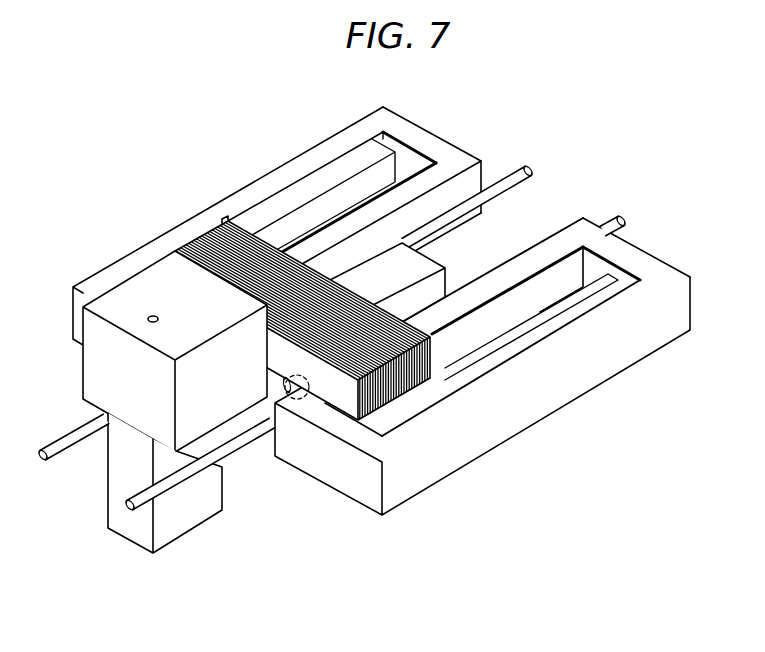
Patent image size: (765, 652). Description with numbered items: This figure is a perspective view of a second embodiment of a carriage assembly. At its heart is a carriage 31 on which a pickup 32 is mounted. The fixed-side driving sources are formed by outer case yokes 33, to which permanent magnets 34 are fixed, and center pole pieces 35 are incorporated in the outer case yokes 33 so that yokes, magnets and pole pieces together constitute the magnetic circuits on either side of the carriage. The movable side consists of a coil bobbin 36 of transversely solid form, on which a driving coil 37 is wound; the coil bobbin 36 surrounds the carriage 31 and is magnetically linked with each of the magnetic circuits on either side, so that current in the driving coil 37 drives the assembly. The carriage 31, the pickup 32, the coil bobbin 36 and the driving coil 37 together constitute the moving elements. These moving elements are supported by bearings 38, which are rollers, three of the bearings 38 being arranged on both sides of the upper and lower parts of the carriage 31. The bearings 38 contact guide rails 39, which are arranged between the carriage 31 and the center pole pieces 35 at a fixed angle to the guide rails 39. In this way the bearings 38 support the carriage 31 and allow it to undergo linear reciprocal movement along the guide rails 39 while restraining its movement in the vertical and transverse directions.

The carriage 31 is at (174, 533).
The pickup 32 is at (147, 277).
The outer case yoke 33 is at (310, 155).
The permanent magnet 34 is at (353, 157).
The center pole piece 35 is at (425, 172).
The coil bobbin 36 is at (241, 224).
The driving coil 37 is at (203, 240).
The bearing 38 is at (281, 383).
The guide rail 39 is at (531, 168).